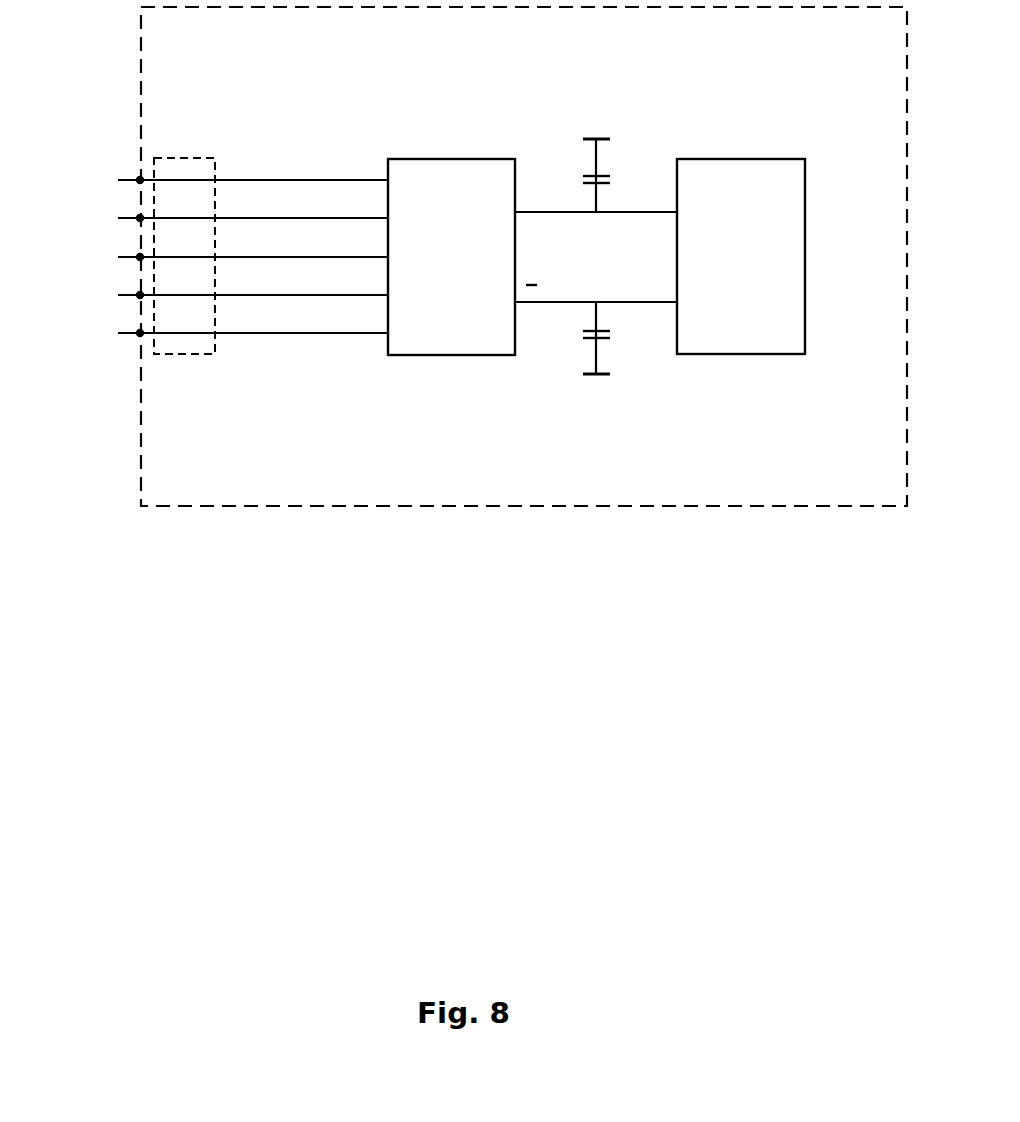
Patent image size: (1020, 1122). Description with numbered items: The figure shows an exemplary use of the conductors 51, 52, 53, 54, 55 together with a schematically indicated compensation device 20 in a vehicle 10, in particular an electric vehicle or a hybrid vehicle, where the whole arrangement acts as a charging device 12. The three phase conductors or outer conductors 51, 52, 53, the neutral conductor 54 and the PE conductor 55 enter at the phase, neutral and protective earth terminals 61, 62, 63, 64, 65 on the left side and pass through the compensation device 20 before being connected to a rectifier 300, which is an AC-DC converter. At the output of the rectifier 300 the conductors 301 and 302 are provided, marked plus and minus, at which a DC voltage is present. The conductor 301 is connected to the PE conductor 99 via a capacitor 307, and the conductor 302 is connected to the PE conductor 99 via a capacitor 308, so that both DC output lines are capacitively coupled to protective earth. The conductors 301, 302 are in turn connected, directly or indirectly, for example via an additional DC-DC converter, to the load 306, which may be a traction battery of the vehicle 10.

The vehicle 10 is at (212, 508).
The charging device 12 is at (302, 414).
The compensation device 20 is at (178, 357).
The phase conductor 51 is at (367, 180).
The phase conductor 52 is at (317, 218).
The phase conductor 53 is at (263, 257).
The neutral conductor 54 is at (335, 295).
The PE conductor 55 is at (373, 333).
The first phase terminal L1 61 is at (140, 180).
The second phase terminal L2 62 is at (140, 218).
The third phase terminal L3 63 is at (140, 257).
The neutral terminal N 64 is at (140, 295).
The protective earth terminal PE 65 is at (140, 333).
The PE conductor 99 is at (607, 139).
The rectifier 300 is at (450, 355).
The conductor 301 is at (558, 212).
The conductor 302 is at (562, 302).
The load 306 is at (778, 354).
The capacitor 307 is at (607, 176).
The capacitor 308 is at (607, 340).